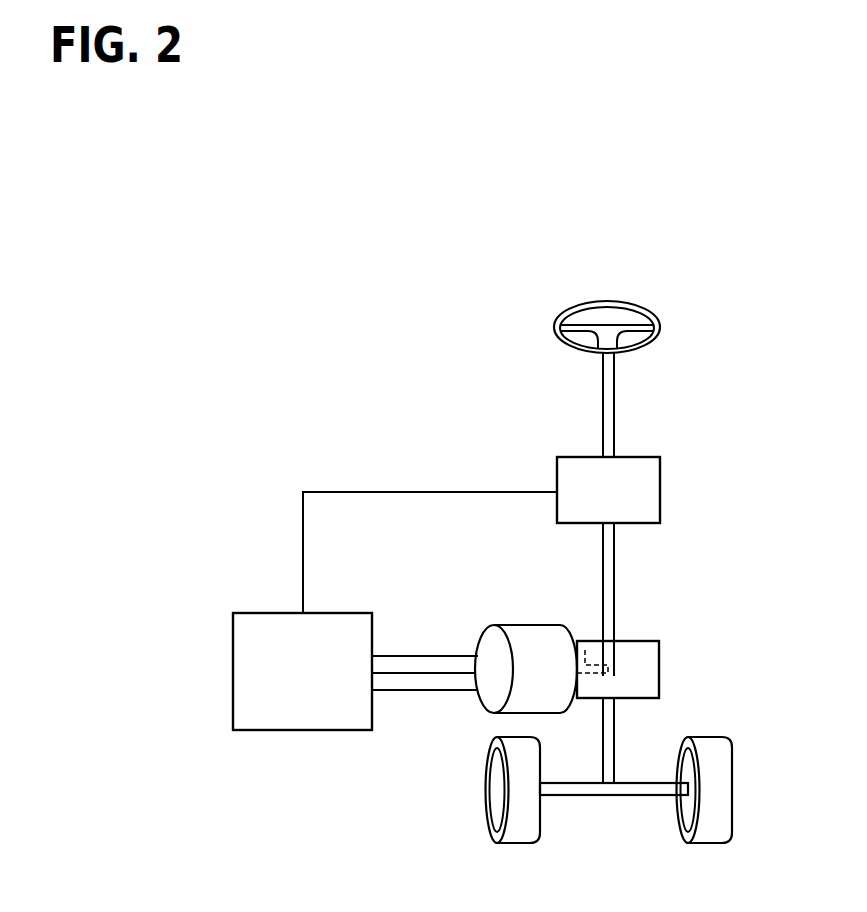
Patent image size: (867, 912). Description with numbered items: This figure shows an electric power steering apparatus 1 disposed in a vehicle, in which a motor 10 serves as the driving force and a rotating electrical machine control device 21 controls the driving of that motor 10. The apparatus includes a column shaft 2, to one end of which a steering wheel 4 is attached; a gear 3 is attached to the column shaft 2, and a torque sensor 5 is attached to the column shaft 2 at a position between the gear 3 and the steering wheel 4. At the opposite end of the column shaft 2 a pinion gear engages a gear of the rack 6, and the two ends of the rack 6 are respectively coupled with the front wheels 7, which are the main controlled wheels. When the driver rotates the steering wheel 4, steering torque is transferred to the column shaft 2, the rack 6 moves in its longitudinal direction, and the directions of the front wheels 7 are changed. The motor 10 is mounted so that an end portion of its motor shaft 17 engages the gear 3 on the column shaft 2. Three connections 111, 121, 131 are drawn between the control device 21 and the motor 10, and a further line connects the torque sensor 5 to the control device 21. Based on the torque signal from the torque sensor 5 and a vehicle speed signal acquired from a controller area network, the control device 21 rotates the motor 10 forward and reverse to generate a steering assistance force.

The electric power steering apparatus 1 is at (744, 430).
The column shaft 2 is at (615, 613).
The gear 3 is at (659, 667).
The steering wheel 4 is at (607, 301).
The torque sensor 5 is at (660, 488).
The rack 6 is at (624, 796).
The front wheels 7 is at (516, 844).
The motor 10 is at (527, 625).
The motor shaft 17 is at (585, 650).
The rotating electrical machine control device 21 is at (302, 730).
The first motor wiring 111 is at (385, 652).
The second motor wiring 121 is at (418, 670).
The third motor wiring 131 is at (453, 688).